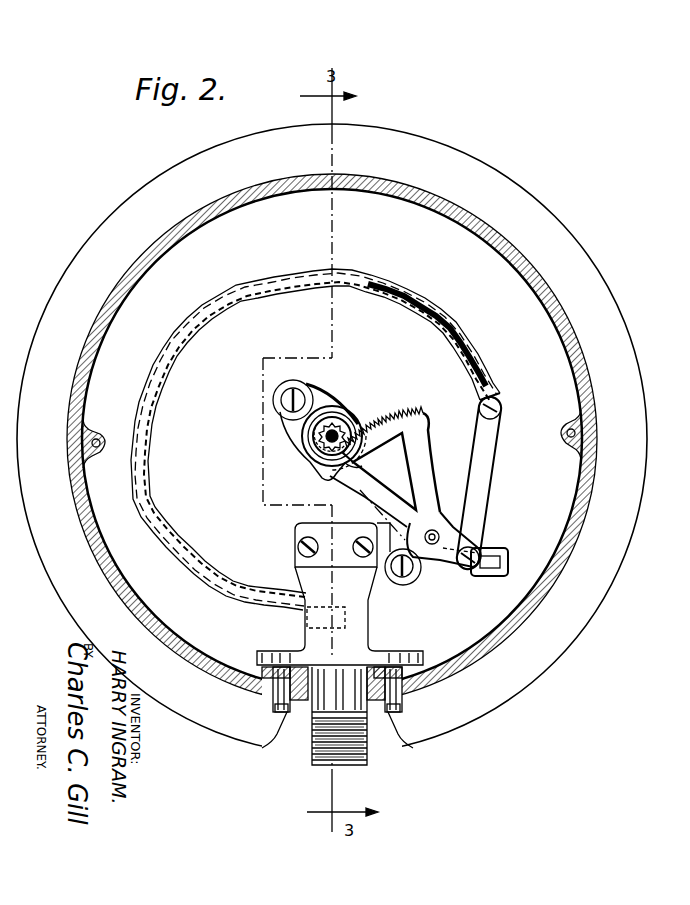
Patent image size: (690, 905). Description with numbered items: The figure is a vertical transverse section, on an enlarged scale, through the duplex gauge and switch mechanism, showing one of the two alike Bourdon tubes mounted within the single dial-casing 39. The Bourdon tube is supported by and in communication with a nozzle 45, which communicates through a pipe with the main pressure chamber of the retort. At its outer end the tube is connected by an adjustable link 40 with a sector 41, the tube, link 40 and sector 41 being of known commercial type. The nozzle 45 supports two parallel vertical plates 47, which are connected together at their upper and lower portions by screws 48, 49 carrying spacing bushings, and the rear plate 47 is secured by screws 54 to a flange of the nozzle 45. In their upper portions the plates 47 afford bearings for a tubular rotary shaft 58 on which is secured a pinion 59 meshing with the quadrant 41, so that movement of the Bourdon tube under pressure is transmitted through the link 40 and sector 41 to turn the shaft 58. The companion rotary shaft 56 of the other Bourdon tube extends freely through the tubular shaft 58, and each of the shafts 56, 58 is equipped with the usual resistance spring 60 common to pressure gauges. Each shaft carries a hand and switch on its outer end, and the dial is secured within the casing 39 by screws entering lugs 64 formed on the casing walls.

The dial-casing 39 is at (332, 442).
The adjustable link 40 is at (486, 466).
The sector 41 is at (413, 462).
The nozzle 45 is at (361, 752).
The parallel vertical plates 47 is at (305, 395).
The screw 48 is at (282, 402).
The screw 49 is at (437, 570).
The screws 54 is at (318, 543).
The rotary shaft 56 is at (320, 446).
The tubular rotary shaft 58 is at (350, 432).
The pinion 59 is at (337, 428).
The resistance spring 60 is at (317, 428).
The lugs 64 is at (100, 437).